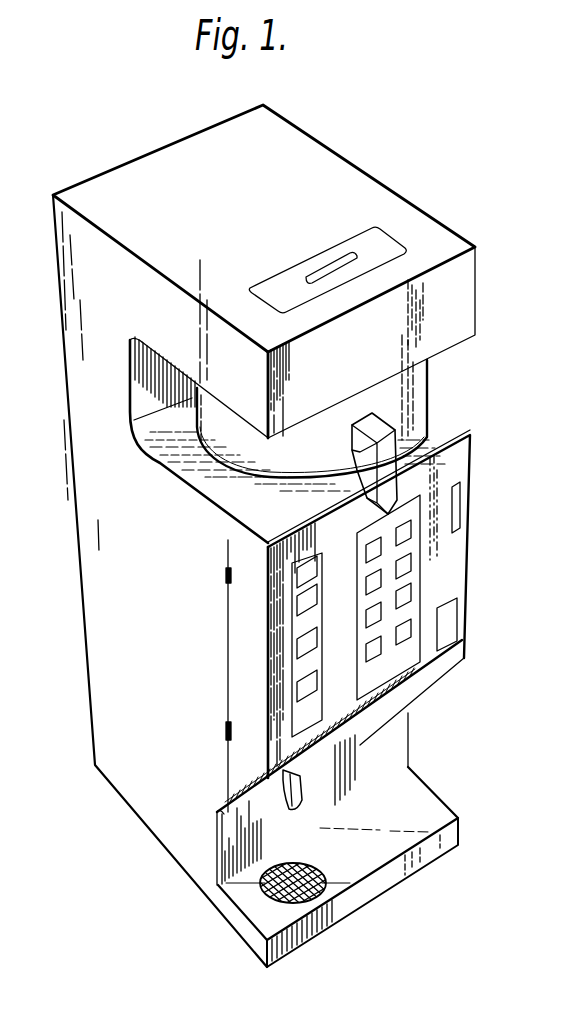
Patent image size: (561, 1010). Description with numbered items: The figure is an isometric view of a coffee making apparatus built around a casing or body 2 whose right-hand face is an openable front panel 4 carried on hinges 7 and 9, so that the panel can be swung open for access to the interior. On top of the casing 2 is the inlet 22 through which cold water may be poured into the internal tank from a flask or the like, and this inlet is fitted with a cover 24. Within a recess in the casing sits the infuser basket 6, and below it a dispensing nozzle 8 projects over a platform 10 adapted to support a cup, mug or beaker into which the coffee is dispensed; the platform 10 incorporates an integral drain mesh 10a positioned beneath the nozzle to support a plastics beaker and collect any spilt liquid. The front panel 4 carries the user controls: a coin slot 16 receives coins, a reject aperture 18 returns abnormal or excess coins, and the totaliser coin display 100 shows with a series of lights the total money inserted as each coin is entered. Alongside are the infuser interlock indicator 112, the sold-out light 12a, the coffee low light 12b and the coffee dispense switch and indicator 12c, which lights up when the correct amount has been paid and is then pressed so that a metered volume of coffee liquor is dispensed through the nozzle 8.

The casing or body 2 is at (111, 612).
The front panel 4 is at (453, 573).
The infuser basket 6 is at (412, 396).
The hinge 7 is at (227, 575).
The dispensing nozzle 8 is at (285, 818).
The hinge 9 is at (228, 738).
The platform 10 is at (425, 800).
The drain mesh 10a is at (310, 884).
The infuser interlock indicator 112 is at (308, 570).
The sold-out light 12a is at (308, 600).
The coffee low light 12b is at (308, 650).
The coffee dispense switch and indicator 12c is at (308, 697).
The coin slot 16 is at (458, 506).
The reject aperture 18 is at (452, 625).
The inlet 22 is at (273, 276).
The cover 24 is at (375, 240).
The totaliser coin display 100 is at (410, 510).